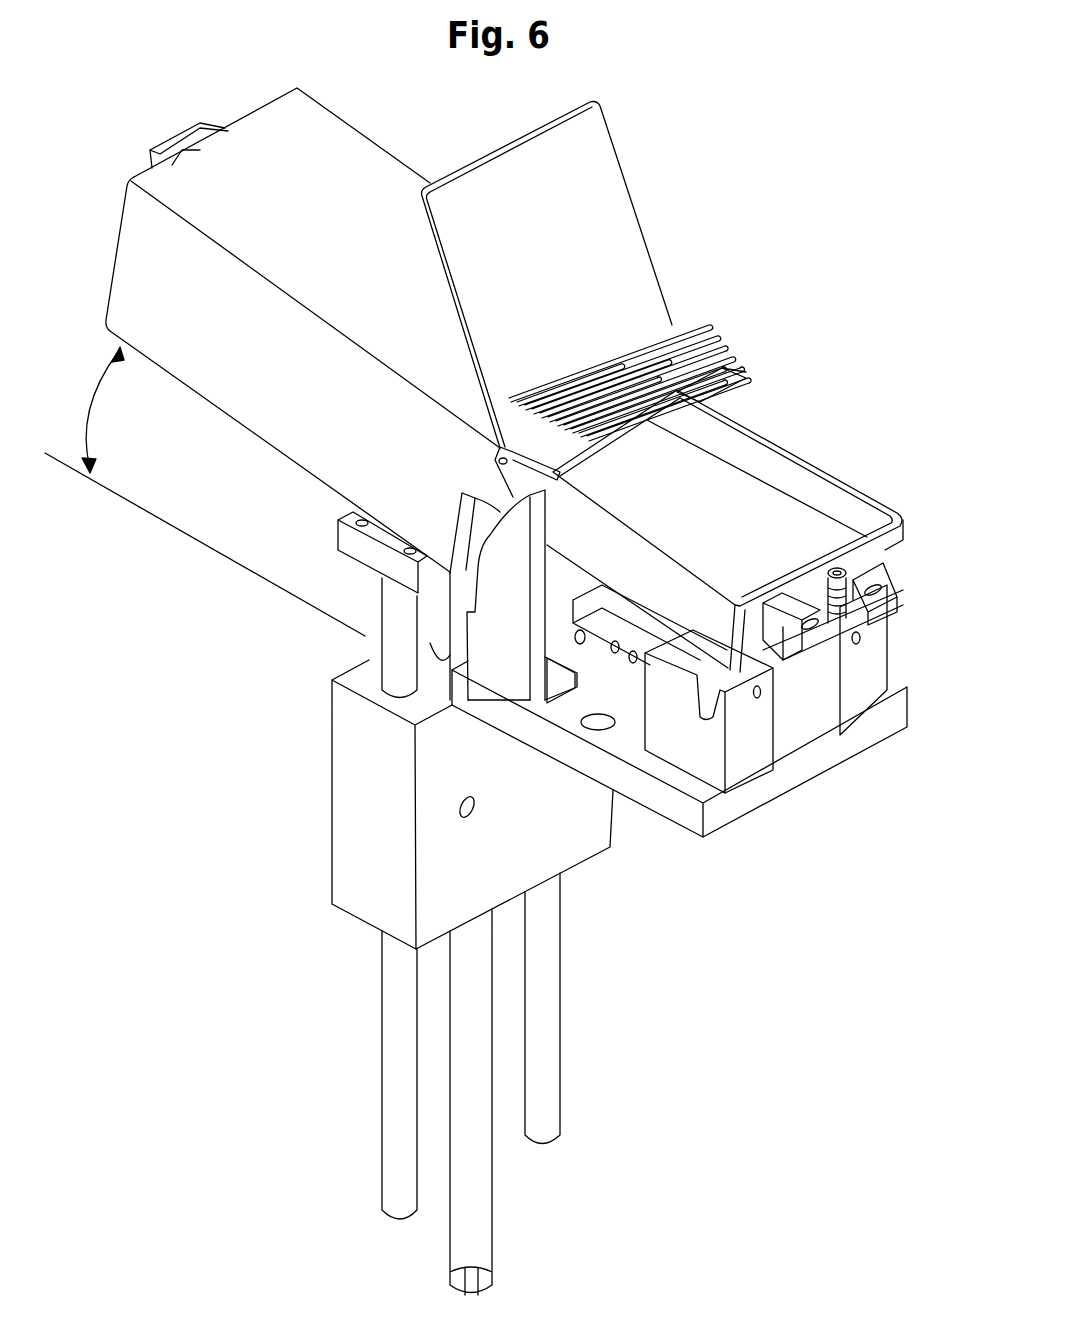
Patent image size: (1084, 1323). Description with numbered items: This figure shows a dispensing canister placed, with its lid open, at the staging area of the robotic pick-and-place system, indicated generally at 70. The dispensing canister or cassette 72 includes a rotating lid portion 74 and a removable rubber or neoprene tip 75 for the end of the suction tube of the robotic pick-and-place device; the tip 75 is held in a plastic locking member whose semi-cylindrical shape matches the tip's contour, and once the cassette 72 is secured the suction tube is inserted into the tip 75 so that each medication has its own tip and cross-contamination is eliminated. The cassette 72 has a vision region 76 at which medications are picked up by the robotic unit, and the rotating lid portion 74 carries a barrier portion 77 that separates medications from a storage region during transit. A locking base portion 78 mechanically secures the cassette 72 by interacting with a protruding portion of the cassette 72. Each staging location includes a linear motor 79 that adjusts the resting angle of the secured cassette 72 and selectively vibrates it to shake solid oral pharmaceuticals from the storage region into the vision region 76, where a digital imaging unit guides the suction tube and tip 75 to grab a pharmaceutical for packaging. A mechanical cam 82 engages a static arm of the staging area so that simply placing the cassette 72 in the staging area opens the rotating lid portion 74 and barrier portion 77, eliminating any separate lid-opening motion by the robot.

The staging area of the robotic pick-and-place system 70 is at (688, 886).
The dispensing canister or cassette 72 is at (373, 155).
The rotating lid portion 74 is at (630, 240).
The removable rubber or neoprene tip 75 is at (898, 597).
The vision region 76 is at (807, 517).
The barrier portion 77 is at (695, 322).
The locking base portion 78 is at (867, 703).
The linear motor 79 is at (352, 797).
The mechanical cam 82 is at (733, 447).